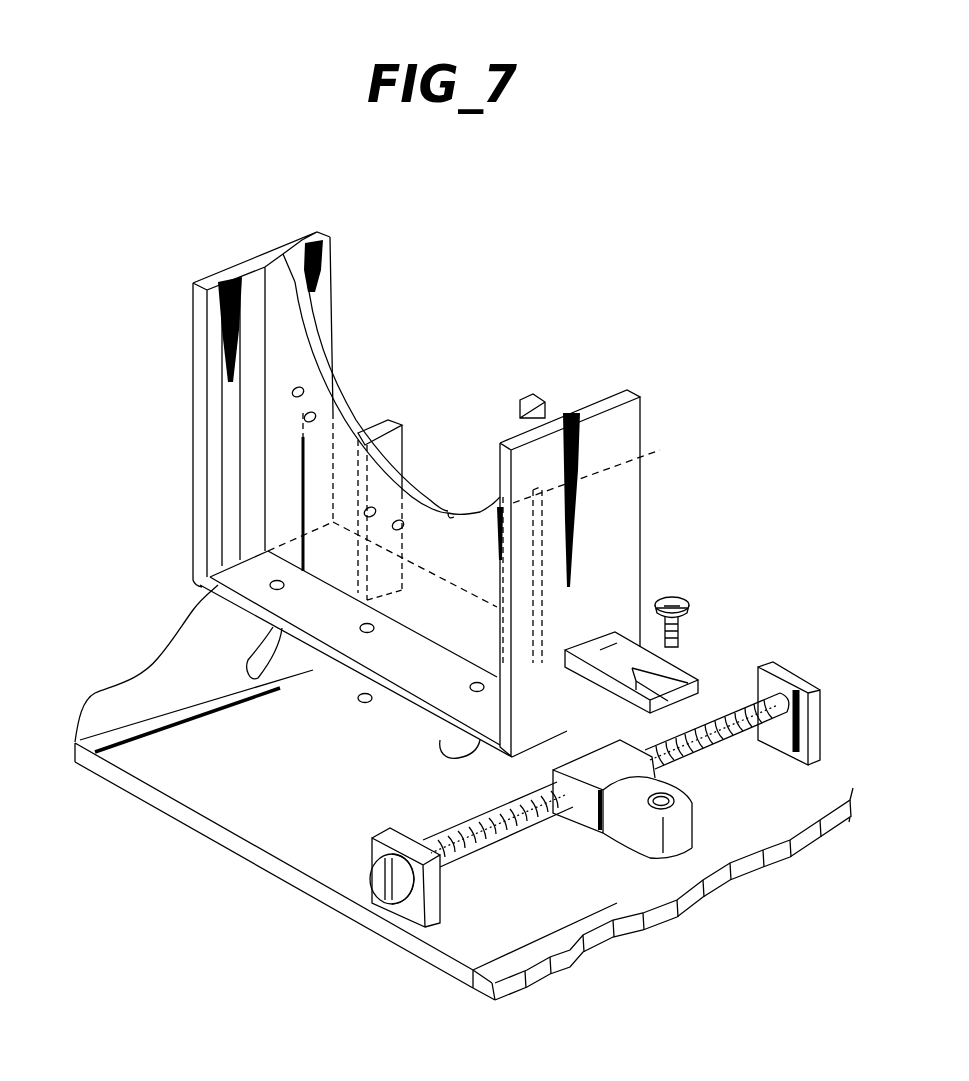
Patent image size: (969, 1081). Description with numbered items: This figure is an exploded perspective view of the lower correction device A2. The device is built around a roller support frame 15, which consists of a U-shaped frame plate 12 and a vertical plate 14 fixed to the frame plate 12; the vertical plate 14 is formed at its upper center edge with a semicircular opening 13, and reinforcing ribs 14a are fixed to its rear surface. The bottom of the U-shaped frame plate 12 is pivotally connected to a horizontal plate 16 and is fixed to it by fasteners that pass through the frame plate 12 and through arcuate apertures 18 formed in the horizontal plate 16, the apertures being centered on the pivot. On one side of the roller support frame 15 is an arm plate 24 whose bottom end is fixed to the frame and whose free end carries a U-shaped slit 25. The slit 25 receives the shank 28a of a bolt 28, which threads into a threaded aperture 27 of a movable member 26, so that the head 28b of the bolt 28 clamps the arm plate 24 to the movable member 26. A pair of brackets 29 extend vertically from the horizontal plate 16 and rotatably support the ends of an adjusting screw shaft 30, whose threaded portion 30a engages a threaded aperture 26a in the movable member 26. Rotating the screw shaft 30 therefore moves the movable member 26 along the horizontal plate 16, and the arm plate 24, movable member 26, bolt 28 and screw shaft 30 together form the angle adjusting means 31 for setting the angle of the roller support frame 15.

The U-shaped frame plate 12 is at (418, 462).
The semicircular opening 13 is at (447, 507).
The vertical plate 14 is at (303, 465).
The reinforcing ribs 14a is at (403, 423).
The roller support frame 15 is at (230, 267).
The horizontal plate 16 is at (262, 850).
The arcuate apertures 18 is at (247, 658).
The arm plate 24 is at (617, 643).
The U-shaped slit 25 is at (672, 710).
The movable member 26 is at (604, 823).
The threaded aperture 26a is at (537, 790).
The threaded aperture 27 is at (690, 790).
The bolt 28 is at (720, 593).
The head of the bolt 28b is at (720, 593).
The shank of the bolt 28a is at (687, 633).
The brackets 29 is at (823, 707).
The adjusting screw shaft 30 is at (498, 834).
The threaded portion 30a is at (510, 837).
The angle adjusting means 31 is at (545, 913).
The lower correction device A2 is at (568, 217).